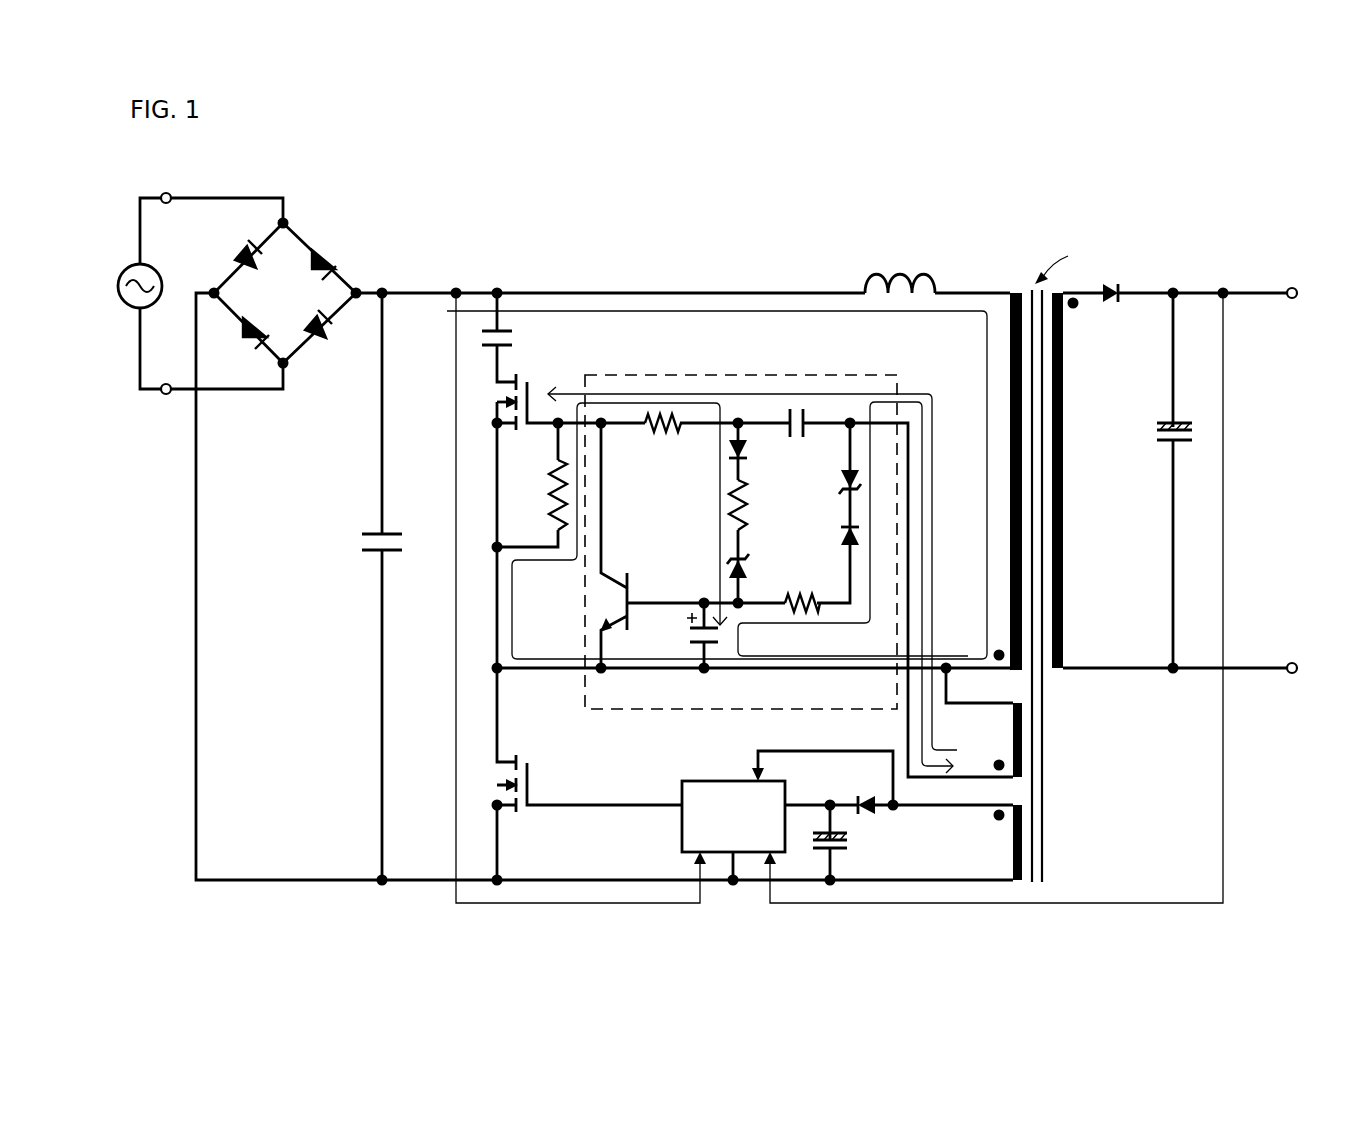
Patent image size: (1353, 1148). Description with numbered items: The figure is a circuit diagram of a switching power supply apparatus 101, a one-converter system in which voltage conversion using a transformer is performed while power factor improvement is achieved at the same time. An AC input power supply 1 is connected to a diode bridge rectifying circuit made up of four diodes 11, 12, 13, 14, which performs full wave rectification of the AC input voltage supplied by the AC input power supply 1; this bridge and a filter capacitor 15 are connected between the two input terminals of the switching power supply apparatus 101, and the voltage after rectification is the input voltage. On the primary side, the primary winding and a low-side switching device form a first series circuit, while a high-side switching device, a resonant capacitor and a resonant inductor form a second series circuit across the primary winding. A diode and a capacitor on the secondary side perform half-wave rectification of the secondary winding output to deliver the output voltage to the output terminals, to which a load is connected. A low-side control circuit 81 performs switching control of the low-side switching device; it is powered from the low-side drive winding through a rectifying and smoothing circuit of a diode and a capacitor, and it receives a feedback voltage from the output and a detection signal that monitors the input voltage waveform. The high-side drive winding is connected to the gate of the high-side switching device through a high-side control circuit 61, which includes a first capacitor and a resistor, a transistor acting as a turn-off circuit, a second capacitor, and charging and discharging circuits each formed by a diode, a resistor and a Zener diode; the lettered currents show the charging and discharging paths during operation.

The AC input power supply 1 is at (126, 268).
The diode 11 is at (234, 248).
The diode 12 is at (324, 252).
The diode 13 is at (242, 343).
The diode 14 is at (326, 339).
The filter capacitor 15 is at (375, 586).
The high-side control circuit 61 is at (900, 374).
The low-side control circuit 81 is at (682, 780).
The switching power supply apparatus 101 is at (811, 253).